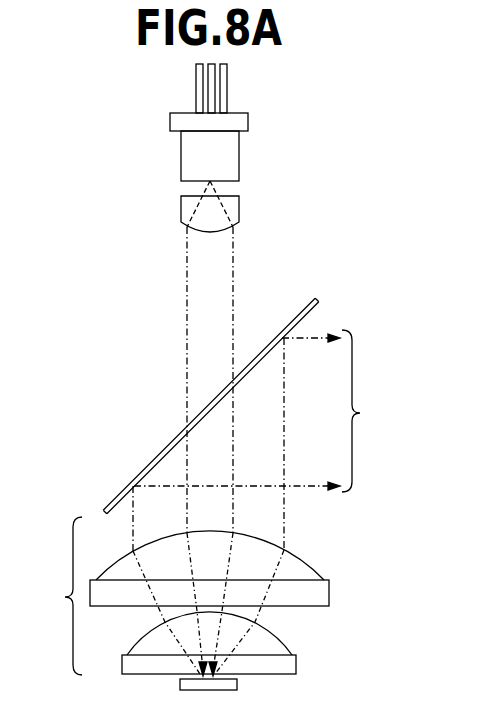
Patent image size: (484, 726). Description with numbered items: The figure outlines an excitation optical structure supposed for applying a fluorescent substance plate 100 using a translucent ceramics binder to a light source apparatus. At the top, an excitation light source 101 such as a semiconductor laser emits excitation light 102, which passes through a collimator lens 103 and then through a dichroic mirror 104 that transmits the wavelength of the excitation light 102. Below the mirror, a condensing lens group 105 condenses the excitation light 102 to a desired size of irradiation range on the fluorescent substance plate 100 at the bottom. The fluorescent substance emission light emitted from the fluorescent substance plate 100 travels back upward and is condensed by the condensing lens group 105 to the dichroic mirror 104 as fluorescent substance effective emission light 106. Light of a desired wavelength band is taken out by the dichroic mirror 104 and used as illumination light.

The fluorescent substance plate 100 is at (237, 685).
The excitation light source 101 is at (181, 158).
The excitation light 102 is at (187, 288).
The collimator lens 103 is at (181, 205).
The dichroic mirror 104 is at (122, 492).
The condensing lens group 105 is at (174, 596).
The fluorescent substance effective emission light 106 is at (270, 440).